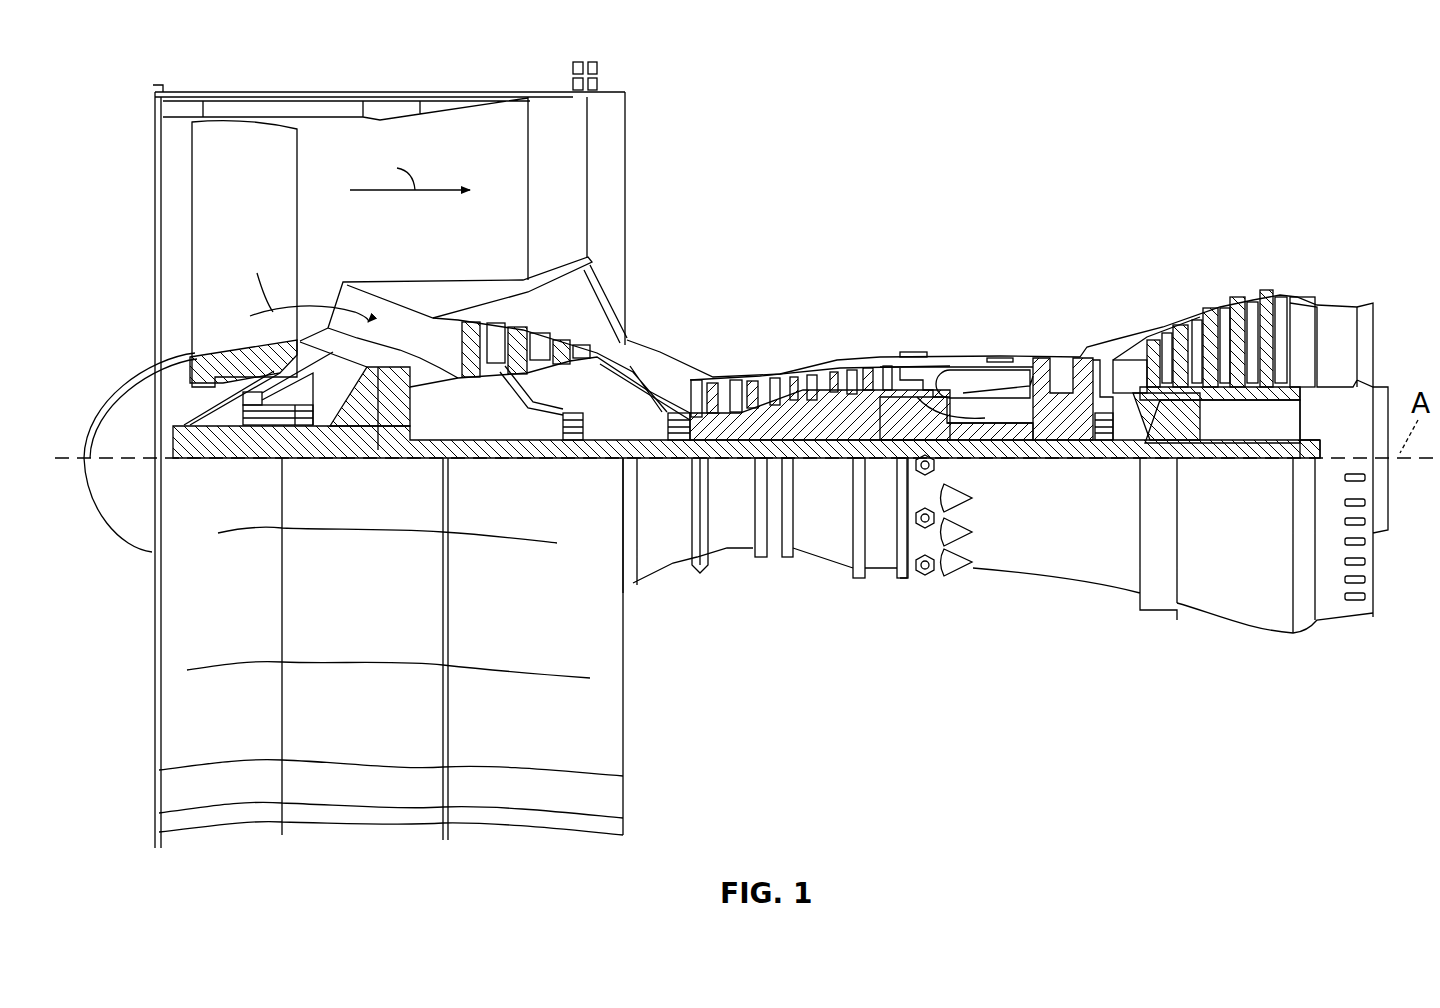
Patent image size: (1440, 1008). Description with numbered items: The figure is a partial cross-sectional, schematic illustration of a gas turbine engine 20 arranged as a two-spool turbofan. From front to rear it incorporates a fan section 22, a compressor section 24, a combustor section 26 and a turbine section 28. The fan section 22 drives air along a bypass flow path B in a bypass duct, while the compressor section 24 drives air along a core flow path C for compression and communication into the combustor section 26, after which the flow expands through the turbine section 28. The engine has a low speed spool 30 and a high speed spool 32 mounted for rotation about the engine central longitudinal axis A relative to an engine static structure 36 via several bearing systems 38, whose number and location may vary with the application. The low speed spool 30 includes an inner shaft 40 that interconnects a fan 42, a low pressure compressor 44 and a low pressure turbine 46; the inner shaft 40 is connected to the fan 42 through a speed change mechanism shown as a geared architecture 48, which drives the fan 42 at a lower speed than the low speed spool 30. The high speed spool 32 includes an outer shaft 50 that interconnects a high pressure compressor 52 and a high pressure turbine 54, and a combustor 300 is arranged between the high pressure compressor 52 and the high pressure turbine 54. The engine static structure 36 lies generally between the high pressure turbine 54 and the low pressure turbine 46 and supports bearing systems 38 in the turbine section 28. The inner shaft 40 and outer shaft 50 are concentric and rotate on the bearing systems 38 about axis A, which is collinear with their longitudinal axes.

The gas turbine engine 20 is at (1258, 61).
The fan section 22 is at (246, 88).
The compressor section 24 is at (722, 258).
The combustor section 26 is at (957, 272).
The turbine section 28 is at (1135, 256).
The low speed spool 30 is at (842, 466).
The high speed spool 32 is at (900, 413).
The engine static structure 36 is at (880, 582).
The bearing systems 38 is at (272, 460).
The inner shaft 40 is at (672, 460).
The fan 42 is at (255, 193).
The low pressure compressor 44 is at (545, 333).
The low pressure turbine 46 is at (1200, 308).
The geared architecture 48 is at (376, 448).
The outer shaft 50 is at (1017, 437).
The high pressure compressor 52 is at (803, 423).
The high pressure turbine 54 is at (1065, 357).
The combustor 300 is at (980, 383).